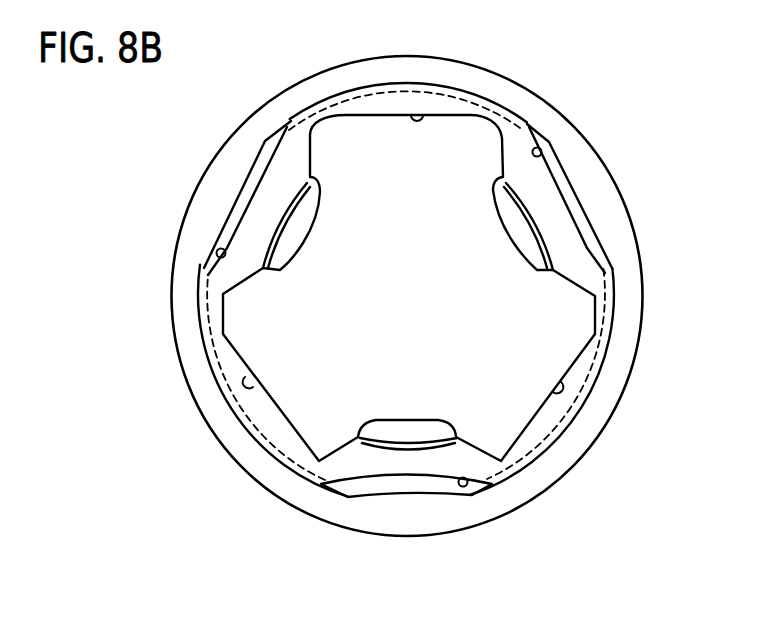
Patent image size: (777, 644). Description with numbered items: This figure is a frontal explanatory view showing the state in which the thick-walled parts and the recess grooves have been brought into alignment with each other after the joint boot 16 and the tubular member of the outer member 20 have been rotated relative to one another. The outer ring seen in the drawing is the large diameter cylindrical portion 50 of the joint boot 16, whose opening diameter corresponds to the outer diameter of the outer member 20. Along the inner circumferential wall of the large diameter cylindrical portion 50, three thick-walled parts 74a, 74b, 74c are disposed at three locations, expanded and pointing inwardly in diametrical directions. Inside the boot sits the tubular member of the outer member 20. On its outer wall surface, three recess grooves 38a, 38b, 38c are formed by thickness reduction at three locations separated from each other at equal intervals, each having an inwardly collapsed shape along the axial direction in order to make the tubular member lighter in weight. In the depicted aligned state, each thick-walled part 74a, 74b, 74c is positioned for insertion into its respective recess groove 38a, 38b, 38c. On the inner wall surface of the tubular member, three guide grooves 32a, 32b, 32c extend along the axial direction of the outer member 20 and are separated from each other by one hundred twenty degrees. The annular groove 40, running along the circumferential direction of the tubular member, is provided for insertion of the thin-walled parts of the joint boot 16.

The joint boot 16 is at (541, 119).
The large diameter cylindrical portion 50 is at (422, 281).
The outer member 20 is at (525, 469).
The annular groove 40 is at (378, 95).
The thick-walled part 74a is at (577, 209).
The thick-walled part 74b is at (398, 486).
The thick-walled part 74c is at (250, 192).
The recess groove 38a is at (533, 154).
The recess groove 38b is at (465, 478).
The recess groove 38c is at (225, 254).
The guide groove 32a is at (245, 380).
The guide groove 32b is at (417, 113).
The guide groove 32c is at (562, 392).